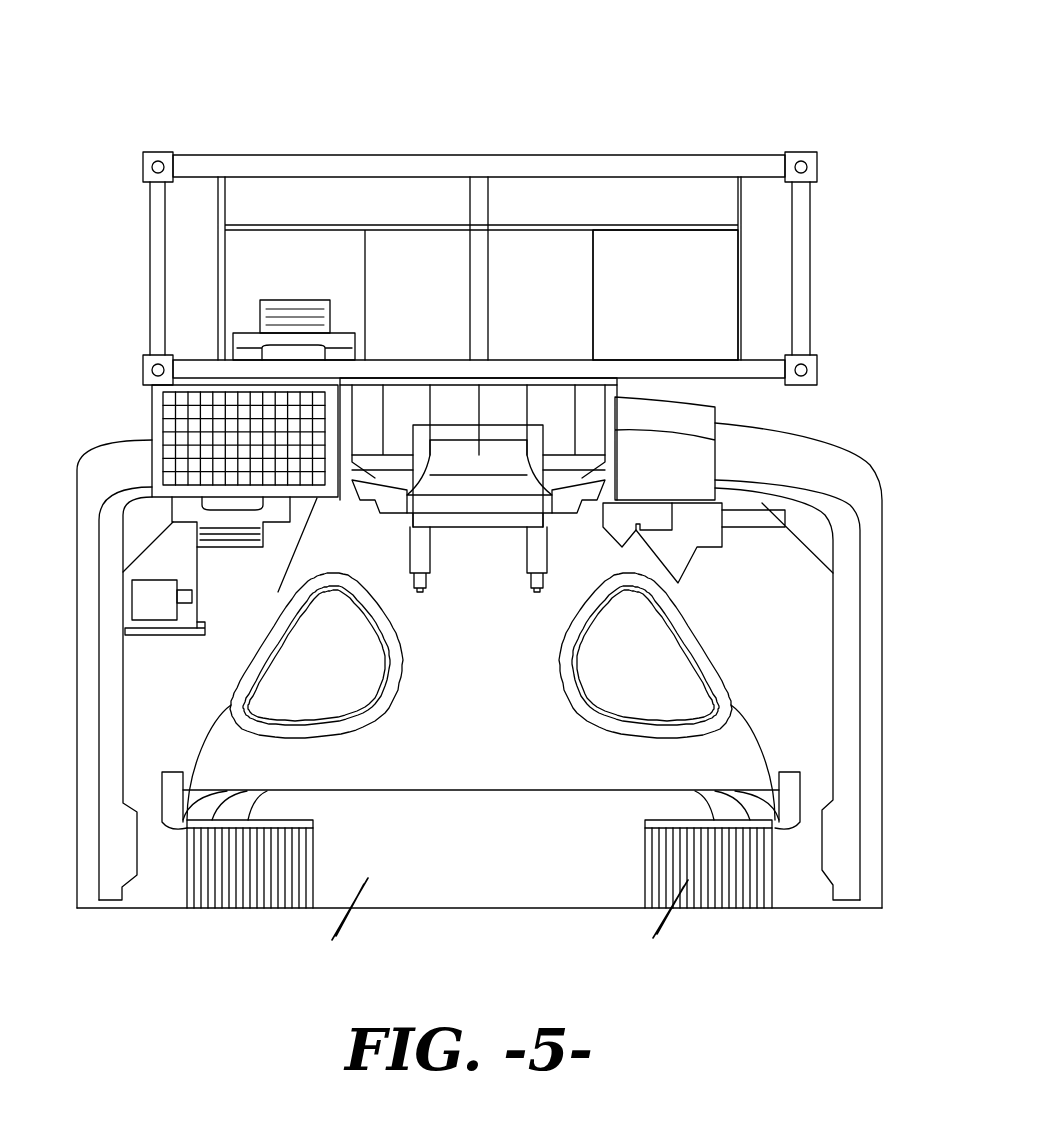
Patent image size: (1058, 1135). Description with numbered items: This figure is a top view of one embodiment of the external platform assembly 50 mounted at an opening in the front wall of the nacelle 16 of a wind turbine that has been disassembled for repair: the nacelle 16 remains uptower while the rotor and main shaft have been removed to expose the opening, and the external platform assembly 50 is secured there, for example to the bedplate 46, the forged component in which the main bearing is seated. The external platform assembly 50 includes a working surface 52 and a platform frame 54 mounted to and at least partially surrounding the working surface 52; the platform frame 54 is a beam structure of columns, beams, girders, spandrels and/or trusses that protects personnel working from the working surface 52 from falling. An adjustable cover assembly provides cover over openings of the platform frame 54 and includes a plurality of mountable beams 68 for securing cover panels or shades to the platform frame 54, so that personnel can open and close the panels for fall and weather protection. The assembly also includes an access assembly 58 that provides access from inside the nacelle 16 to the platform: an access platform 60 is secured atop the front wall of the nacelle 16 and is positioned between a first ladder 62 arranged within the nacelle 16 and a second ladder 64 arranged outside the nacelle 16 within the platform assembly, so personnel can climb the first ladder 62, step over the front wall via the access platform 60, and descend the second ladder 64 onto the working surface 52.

The external platform assembly 50 is at (779, 92).
The platform frame 54 is at (433, 152).
The mountable beams 68 is at (763, 258).
The working surface 52 is at (553, 303).
The second ladder 64 is at (250, 337).
The access platform 60 is at (151, 413).
The access assembly 58 is at (118, 430).
The first ladder 62 is at (230, 547).
The nacelle 16 is at (883, 585).
The bedplate 46 is at (490, 826).